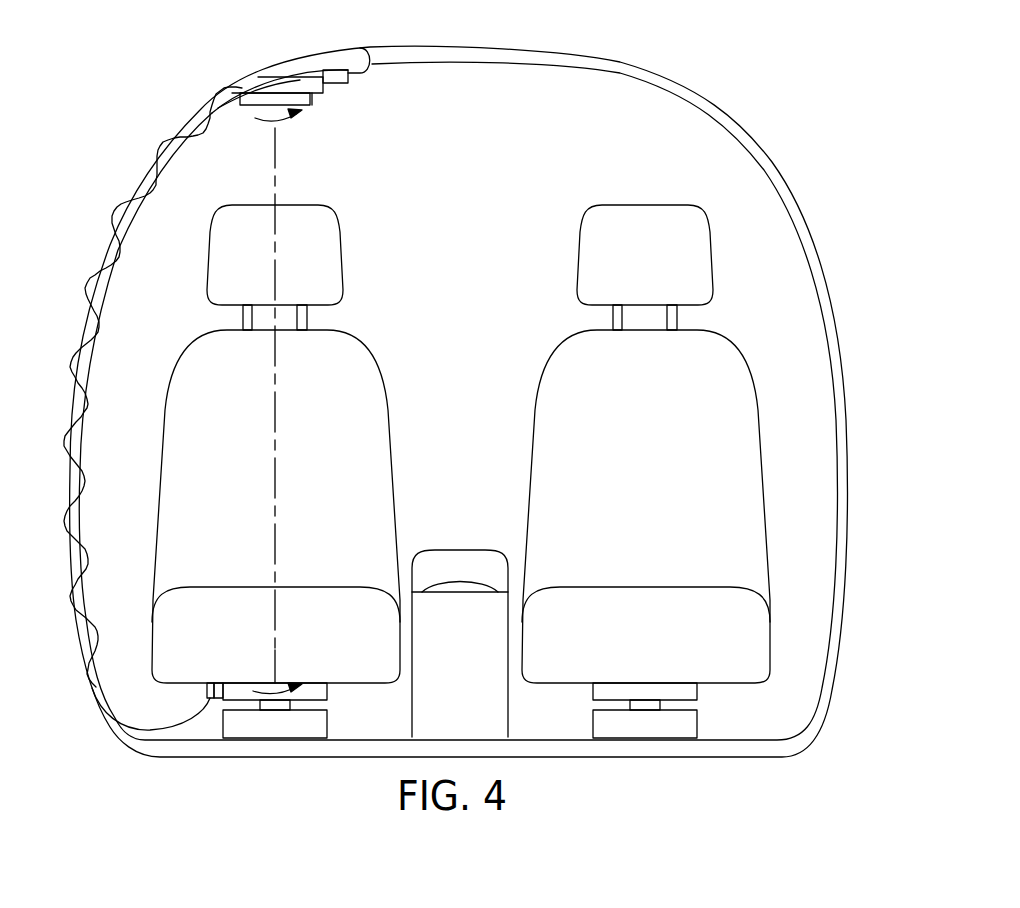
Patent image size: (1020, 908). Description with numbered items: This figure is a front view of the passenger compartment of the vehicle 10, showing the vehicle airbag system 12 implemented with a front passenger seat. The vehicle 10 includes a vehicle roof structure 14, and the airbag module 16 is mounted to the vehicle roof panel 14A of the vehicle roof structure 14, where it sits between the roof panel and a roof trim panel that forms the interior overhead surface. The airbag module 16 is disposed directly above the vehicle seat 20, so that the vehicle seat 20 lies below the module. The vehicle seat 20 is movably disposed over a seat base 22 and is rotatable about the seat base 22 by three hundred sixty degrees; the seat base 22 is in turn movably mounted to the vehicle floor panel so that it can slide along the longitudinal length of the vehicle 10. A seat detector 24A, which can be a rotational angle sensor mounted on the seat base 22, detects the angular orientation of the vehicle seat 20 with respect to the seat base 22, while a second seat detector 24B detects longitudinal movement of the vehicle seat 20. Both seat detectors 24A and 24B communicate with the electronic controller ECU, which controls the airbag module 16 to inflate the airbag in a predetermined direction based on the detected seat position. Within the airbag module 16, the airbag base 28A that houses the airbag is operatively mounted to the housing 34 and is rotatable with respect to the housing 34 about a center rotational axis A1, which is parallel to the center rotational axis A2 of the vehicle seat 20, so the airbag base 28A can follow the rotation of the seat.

The vehicle 10 is at (464, 387).
The vehicle airbag system 12 is at (453, 115).
The vehicle roof structure 14 is at (467, 387).
The vehicle roof panel 14A is at (773, 162).
The airbag module 16 is at (380, 80).
The vehicle seat 20 is at (343, 238).
The seat base 22 is at (327, 690).
The seat detector 24A is at (210, 683).
The seat detector 24B is at (218, 683).
The airbag base 28A is at (248, 99).
The housing 34 is at (338, 87).
The center rotational axis A1 is at (278, 167).
The center rotational axis A2 is at (278, 658).
The electronic controller ECU is at (340, 85).